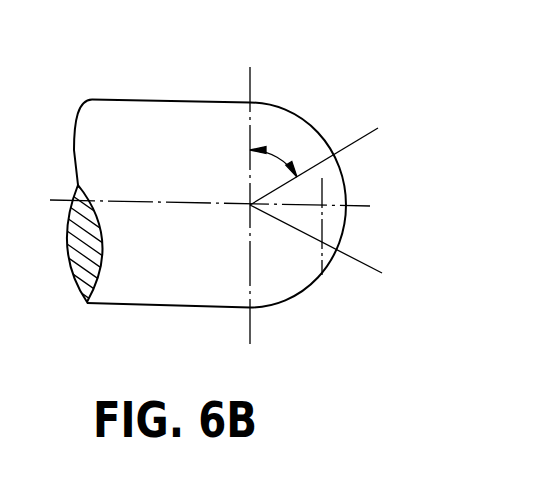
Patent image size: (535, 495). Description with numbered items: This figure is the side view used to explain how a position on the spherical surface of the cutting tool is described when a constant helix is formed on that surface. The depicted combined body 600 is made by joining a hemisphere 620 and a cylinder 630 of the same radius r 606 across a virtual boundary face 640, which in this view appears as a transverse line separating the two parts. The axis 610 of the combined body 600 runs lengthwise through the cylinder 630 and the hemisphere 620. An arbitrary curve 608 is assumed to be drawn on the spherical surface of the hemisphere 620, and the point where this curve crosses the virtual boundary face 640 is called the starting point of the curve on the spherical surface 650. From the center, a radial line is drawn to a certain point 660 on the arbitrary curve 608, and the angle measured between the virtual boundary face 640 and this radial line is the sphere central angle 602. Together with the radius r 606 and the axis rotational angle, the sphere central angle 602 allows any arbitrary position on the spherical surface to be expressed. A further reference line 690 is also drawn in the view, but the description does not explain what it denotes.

The combined body 600 is at (191, 183).
The sphere central angle β 602 is at (265, 158).
The radius r 606 is at (336, 246).
The arbitrary curve 608 is at (303, 122).
The axis 610 is at (362, 210).
The hemisphere 620 is at (147, 276).
The cylinder 630 is at (255, 276).
The virtual boundary face 640 is at (248, 82).
The starting point of the curve on the spherical surface 650 is at (252, 104).
The certain point on the arbitrary curve 660 is at (335, 156).
The tip reference line 690 is at (322, 273).